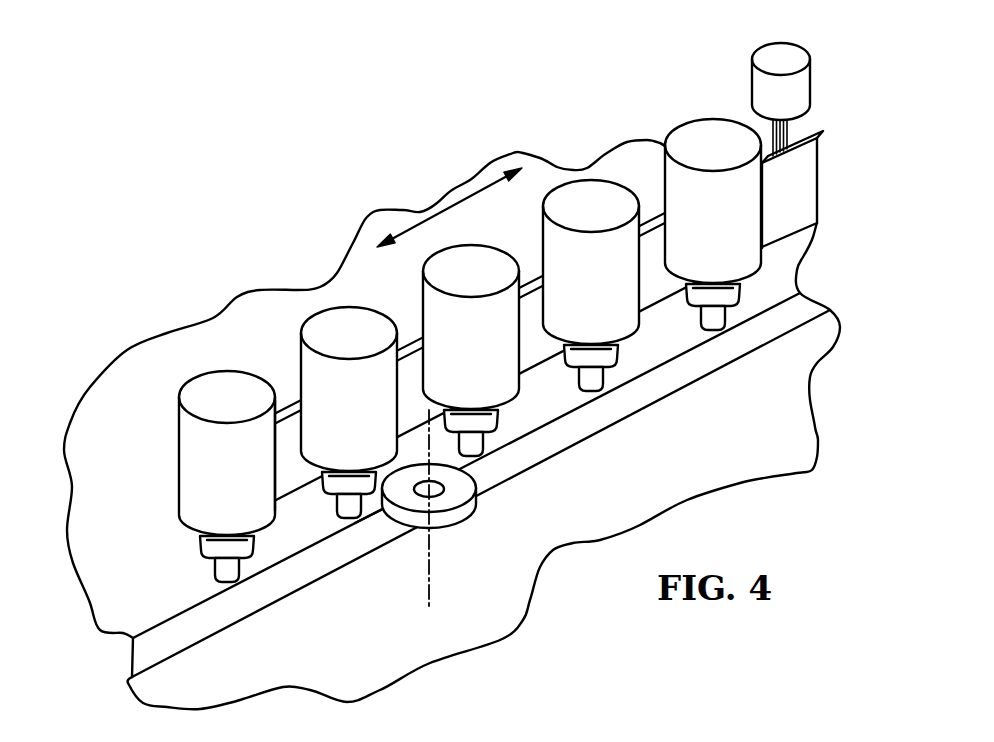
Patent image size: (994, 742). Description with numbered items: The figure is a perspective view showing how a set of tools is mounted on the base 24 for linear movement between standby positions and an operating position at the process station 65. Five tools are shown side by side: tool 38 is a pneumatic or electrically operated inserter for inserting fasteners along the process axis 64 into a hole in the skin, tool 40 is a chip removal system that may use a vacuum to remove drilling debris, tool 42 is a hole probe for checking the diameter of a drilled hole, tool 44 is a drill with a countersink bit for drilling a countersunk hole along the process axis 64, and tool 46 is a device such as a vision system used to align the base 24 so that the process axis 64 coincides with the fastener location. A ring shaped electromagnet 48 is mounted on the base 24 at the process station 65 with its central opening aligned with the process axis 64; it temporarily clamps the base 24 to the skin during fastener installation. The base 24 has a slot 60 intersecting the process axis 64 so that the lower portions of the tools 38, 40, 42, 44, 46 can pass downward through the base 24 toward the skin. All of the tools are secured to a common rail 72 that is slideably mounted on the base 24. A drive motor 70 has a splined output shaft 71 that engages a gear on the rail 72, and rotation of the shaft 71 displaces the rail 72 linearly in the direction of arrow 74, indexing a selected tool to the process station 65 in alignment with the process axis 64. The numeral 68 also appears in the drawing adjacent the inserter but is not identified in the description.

The base 24 is at (760, 447).
The tool (inserter) 38 is at (207, 393).
The tool (chip removal system) 40 is at (345, 333).
The tool (hole probe) 42 is at (435, 298).
The tool (drill) 44 is at (590, 207).
The tool (vision system) 46 is at (712, 146).
The ring shaped electromagnet 48 is at (480, 498).
The slot 60 is at (739, 333).
The process axis 64 is at (429, 575).
The process station 65 is at (395, 514).
The cartridge side wall 68 is at (258, 437).
The drive motor 70 is at (798, 87).
The splined output shaft 71 is at (790, 140).
The common rail 72 is at (793, 182).
The arrow (direction of rail movement) 74 is at (448, 205).